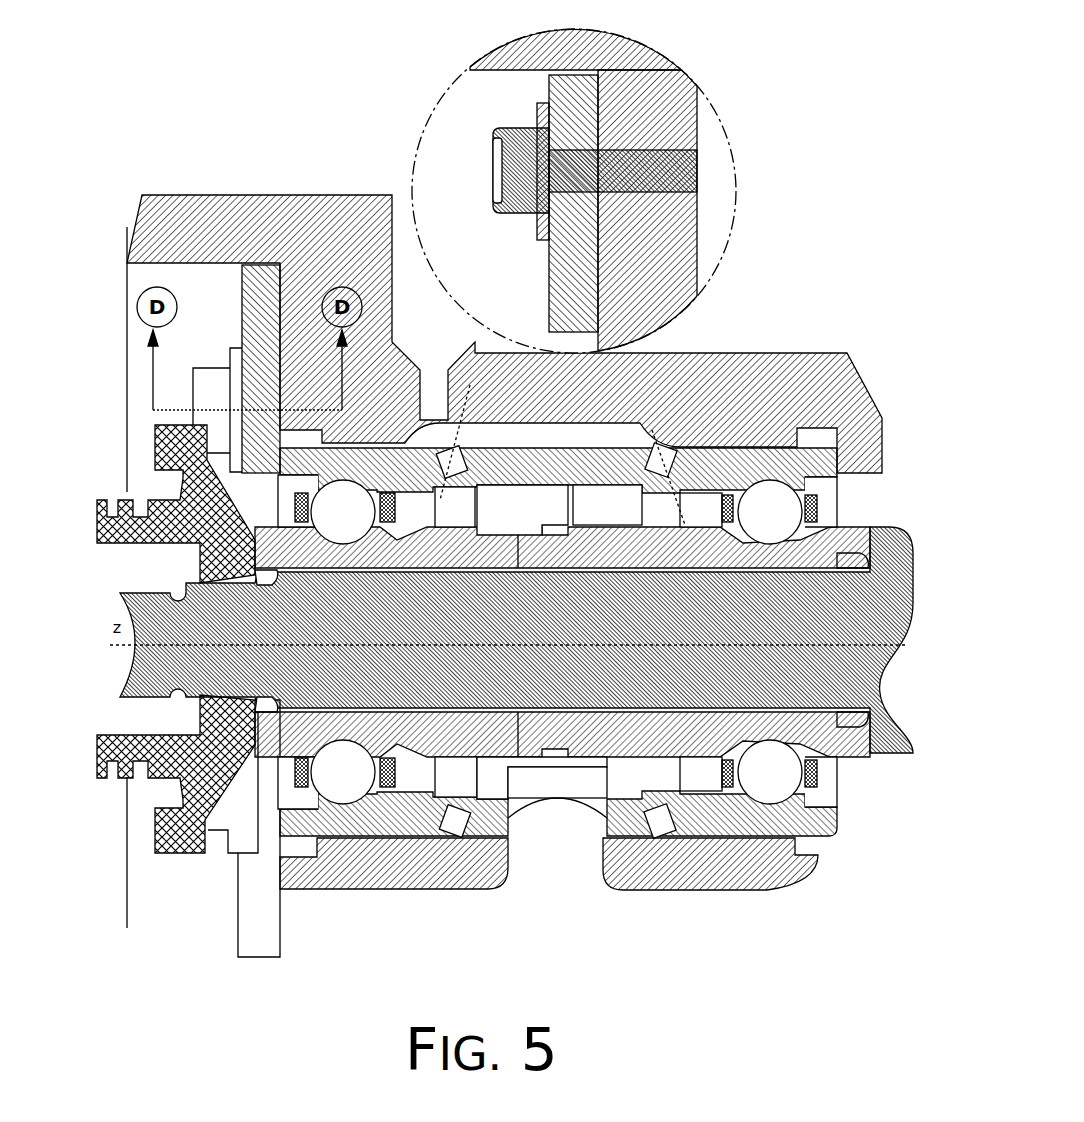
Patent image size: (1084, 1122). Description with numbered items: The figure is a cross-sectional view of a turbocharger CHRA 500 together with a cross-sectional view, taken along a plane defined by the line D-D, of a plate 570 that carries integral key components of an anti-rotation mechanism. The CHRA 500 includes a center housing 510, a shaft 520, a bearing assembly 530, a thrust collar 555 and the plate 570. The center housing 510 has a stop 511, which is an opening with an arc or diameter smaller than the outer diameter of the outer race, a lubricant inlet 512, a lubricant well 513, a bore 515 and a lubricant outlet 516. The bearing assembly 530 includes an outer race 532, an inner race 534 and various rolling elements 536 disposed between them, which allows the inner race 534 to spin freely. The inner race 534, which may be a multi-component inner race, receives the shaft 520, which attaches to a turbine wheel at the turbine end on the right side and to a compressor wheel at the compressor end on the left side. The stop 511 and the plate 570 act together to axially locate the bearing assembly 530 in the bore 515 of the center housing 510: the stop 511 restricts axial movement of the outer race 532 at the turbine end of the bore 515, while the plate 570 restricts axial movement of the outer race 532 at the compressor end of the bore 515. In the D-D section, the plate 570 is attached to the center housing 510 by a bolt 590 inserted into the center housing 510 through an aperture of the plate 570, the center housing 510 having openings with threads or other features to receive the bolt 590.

The CHRA 500 is at (300, 97).
The center housing 510 is at (504, 250).
The stop 511 is at (835, 447).
The lubricant inlet 512 is at (432, 323).
The lubricant well 513 is at (532, 435).
The bore 515 is at (670, 447).
The lubricant outlet 516 is at (549, 864).
The shaft 520 is at (516, 640).
The bearing assembly 530 is at (843, 502).
The outer race 532 is at (558, 642).
The inner race 534 is at (562, 642).
The rolling elements 536 is at (343, 512).
The thrust collar 555 is at (176, 639).
The plate 570 is at (255, 315).
The bolt 590 is at (525, 204).